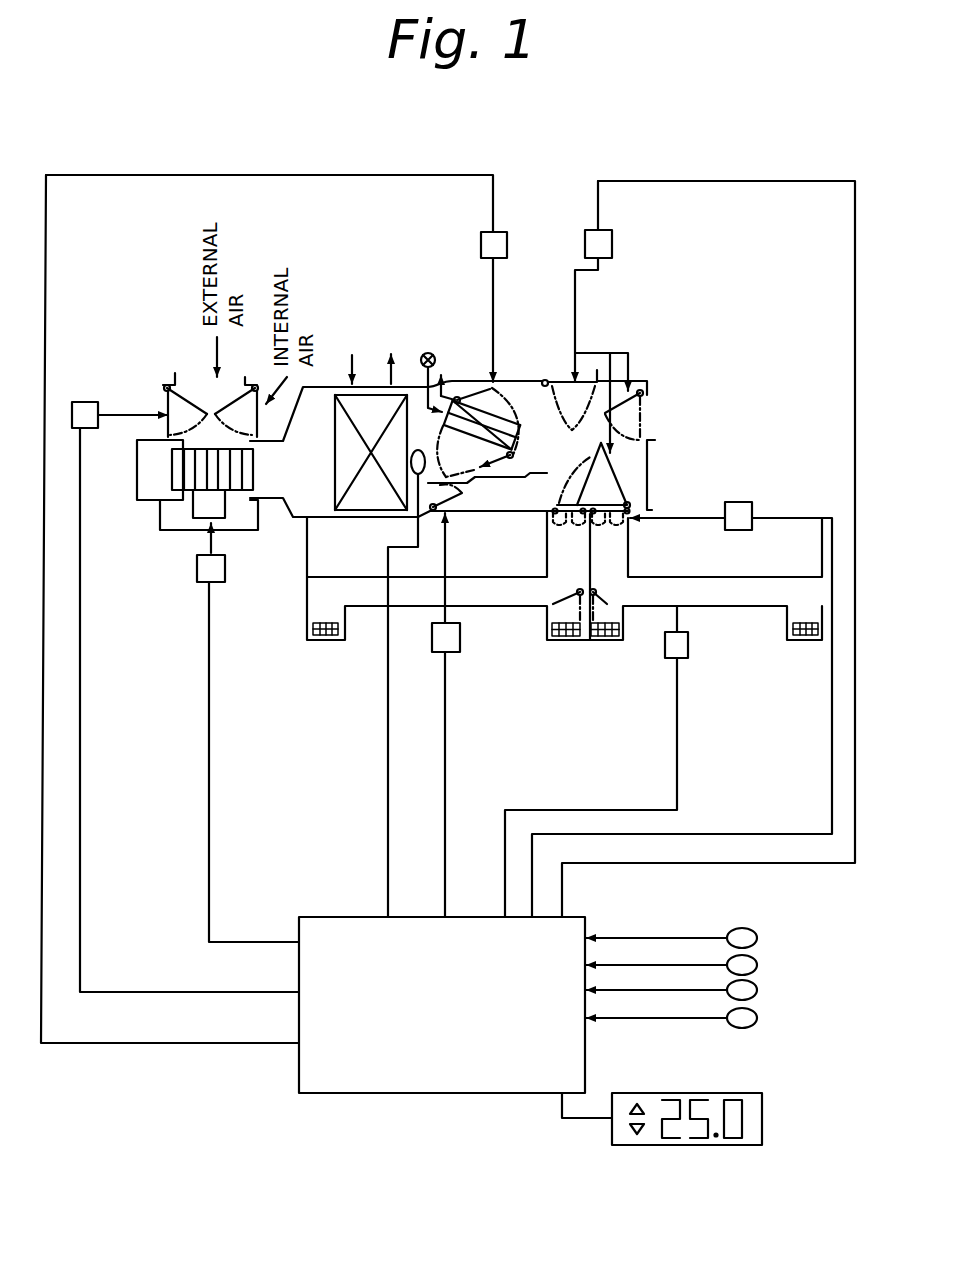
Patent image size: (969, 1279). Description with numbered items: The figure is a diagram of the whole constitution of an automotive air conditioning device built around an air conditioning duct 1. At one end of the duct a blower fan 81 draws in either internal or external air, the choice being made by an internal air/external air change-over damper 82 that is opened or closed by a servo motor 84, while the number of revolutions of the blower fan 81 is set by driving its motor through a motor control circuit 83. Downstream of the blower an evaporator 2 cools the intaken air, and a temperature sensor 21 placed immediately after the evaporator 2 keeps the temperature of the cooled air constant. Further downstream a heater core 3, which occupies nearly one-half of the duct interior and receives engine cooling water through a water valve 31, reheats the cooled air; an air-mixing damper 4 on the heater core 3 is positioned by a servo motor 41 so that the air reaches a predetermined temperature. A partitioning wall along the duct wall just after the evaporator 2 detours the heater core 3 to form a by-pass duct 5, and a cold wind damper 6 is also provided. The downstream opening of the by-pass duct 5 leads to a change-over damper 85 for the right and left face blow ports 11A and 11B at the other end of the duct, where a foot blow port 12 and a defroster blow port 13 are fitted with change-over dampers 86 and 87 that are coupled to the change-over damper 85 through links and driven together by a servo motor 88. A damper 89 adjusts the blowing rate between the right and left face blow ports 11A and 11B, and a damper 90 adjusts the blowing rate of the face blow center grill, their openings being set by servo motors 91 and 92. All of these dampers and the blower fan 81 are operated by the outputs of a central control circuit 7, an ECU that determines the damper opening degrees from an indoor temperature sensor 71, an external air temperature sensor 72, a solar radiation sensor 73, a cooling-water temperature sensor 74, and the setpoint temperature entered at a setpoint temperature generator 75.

The air conditioning duct 1 is at (316, 392).
The evaporator 2 is at (366, 398).
The temperature sensor 21 is at (413, 470).
The heater core 3 is at (475, 398).
The water valve 31 is at (424, 352).
The air-mixing damper 4 is at (496, 402).
The servo motor 41 is at (508, 246).
The by-pass duct 5 is at (474, 512).
The cold wind damper 6 is at (433, 515).
The central control circuit 7 is at (340, 917).
The face blow port 11A is at (560, 518).
The face blow port 11B is at (618, 518).
The foot blow port 12 is at (655, 420).
The defroster blow port 13 is at (590, 383).
The indoor temperature sensor 71 is at (756, 935).
The external air temperature sensor 72 is at (757, 963).
The solar radiation sensor 73 is at (757, 990).
The cooling-water temperature sensor 74 is at (757, 1020).
The setpoint temperature generator 75 is at (762, 1118).
The blower fan 81 is at (188, 478).
The internal air/external air change-over damper 82 is at (195, 393).
The motor control circuit 83 is at (225, 572).
The servo motor 84 is at (84, 405).
The change-over damper 85 is at (616, 476).
The change-over damper 86 is at (620, 380).
The change-over damper 87 is at (548, 380).
The servo motor 88 is at (612, 244).
The damper 89 is at (590, 478).
The damper 90 is at (612, 604).
The servo motor 91 is at (748, 503).
The servo motor 92 is at (688, 644).